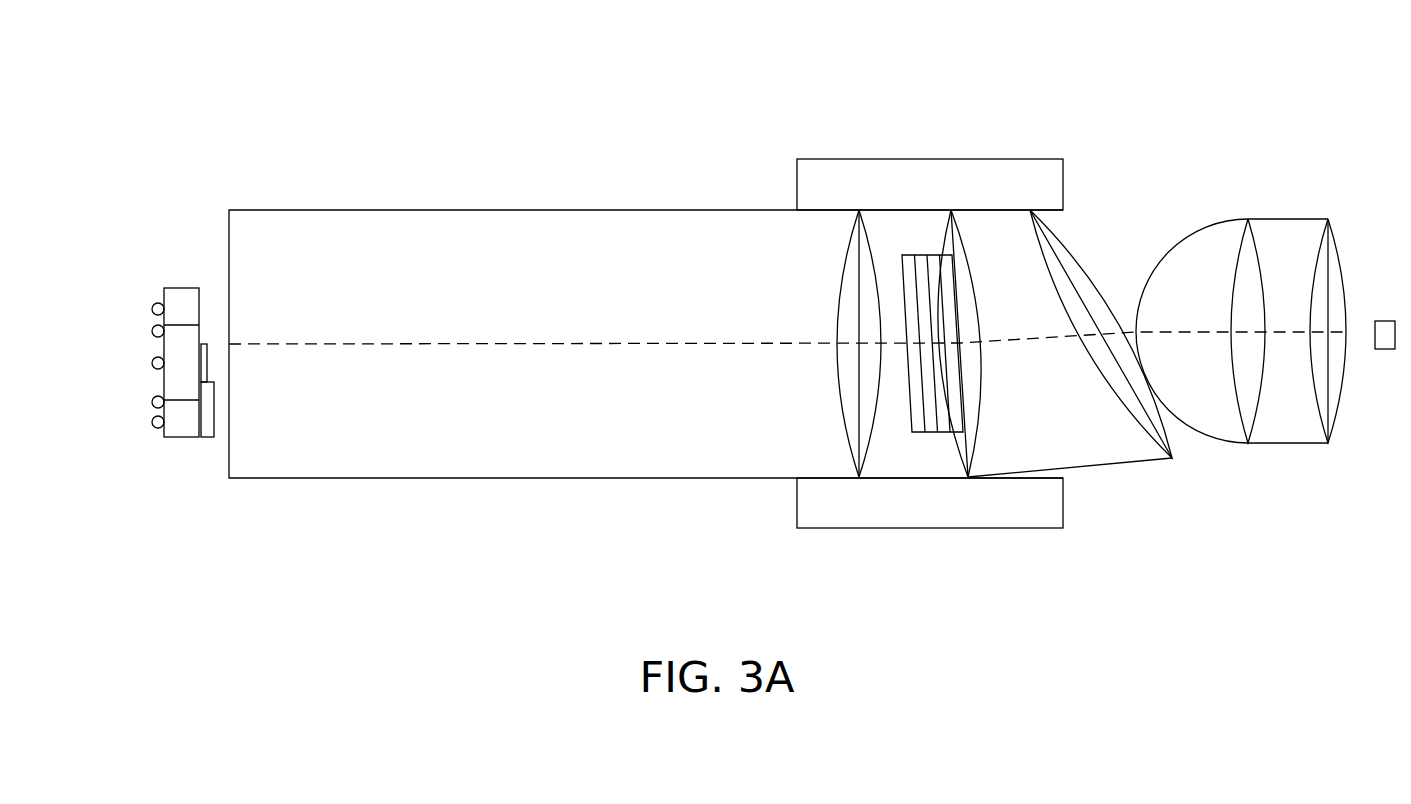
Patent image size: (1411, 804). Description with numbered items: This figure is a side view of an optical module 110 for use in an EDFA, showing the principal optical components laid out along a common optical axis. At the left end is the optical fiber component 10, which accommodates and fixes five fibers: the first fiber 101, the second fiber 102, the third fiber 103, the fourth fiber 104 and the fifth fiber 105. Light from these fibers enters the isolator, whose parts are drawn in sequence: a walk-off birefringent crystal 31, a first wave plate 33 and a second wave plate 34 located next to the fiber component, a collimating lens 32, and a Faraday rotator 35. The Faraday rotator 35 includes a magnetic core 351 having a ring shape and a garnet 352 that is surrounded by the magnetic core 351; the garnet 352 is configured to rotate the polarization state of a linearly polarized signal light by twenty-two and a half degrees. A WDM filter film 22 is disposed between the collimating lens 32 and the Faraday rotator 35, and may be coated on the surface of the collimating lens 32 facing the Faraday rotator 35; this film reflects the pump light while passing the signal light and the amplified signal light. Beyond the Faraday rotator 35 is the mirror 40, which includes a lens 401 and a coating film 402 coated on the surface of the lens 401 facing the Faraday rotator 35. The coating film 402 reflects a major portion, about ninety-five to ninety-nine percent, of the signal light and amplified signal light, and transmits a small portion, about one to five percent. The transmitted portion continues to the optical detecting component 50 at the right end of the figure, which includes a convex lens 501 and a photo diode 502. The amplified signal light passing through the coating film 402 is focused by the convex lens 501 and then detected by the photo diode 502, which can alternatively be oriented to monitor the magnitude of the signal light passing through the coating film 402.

The optical module 110 is at (1122, 102).
The optical fiber component 10 is at (78, 288).
The first fiber 101 is at (152, 402).
The second fiber 102 is at (152, 363).
The third fiber 103 is at (152, 331).
The fourth fiber 104 is at (152, 422).
The fifth fiber 105 is at (152, 309).
The walk-off birefringent crystal 31 is at (175, 439).
The collimating lens 32 is at (343, 210).
The first wave plate 33 is at (210, 439).
The second wave plate 34 is at (204, 343).
The WDM filter film 22 is at (858, 427).
The Faraday rotator 35 is at (812, 590).
The magnetic core 351 is at (930, 178).
The garnet 352 is at (930, 422).
The mirror 40 is at (925, 590).
The lens 401 is at (1048, 453).
The coating film 402 is at (963, 445).
The optical detecting component 50 is at (1185, 165).
The convex lens 501 is at (1205, 240).
The photo diode 502 is at (1385, 330).